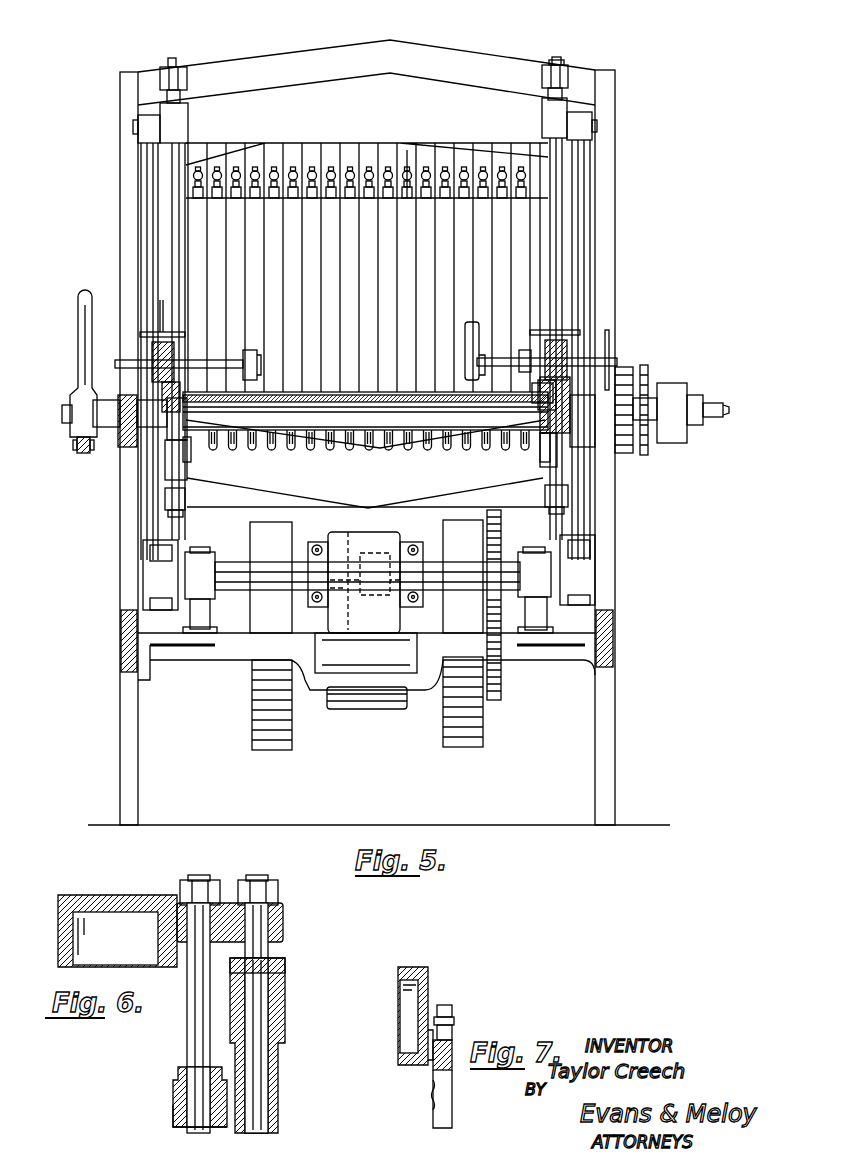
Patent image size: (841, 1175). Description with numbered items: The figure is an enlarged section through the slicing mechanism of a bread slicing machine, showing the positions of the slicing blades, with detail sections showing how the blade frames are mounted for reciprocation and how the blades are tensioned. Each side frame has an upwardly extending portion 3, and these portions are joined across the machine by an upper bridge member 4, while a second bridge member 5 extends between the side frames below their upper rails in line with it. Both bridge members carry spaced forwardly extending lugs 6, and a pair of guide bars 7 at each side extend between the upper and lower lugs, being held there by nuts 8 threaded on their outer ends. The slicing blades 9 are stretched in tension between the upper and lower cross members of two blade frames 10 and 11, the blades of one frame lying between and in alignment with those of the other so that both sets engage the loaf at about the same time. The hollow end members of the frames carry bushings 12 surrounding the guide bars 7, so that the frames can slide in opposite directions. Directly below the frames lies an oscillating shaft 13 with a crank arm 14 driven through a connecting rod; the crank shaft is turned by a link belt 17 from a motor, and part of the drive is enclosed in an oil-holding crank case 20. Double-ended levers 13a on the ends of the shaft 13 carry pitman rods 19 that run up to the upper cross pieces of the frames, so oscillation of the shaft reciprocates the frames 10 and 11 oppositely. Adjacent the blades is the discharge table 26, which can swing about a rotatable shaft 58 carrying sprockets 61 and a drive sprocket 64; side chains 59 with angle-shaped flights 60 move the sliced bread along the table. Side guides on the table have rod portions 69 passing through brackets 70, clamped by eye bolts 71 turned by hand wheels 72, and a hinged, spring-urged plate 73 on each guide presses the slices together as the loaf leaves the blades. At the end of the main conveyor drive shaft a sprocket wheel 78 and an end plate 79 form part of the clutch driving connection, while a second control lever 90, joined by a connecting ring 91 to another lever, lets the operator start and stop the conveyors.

In FIG. 5, the upwardly extending portion 3 is at (122, 245).
In FIG. 5, the upper bridge member 4 is at (483, 60).
In FIG. 6, the upper bridge member 4 is at (100, 897).
In FIG. 5, the second bridge member 5 is at (225, 502).
In FIG. 5, the lugs 6 is at (190, 20).
In FIG. 6, the lugs 6 is at (283, 915).
In FIG. 5, the guide bars 7 is at (178, 60).
In FIG. 6, the guide bars 7 is at (268, 947).
In FIG. 5, the nuts 8 is at (565, 60).
In FIG. 6, the nuts 8 is at (185, 885).
In FIG. 5, the slicing blades 9 is at (340, 160).
In FIG. 7, the slicing blades 9 is at (433, 1110).
In FIG. 5, the blade frame 10 is at (268, 125).
In FIG. 6, the blade frame 10 is at (286, 1023).
In FIG. 5, the blade frame 11 is at (407, 150).
In FIG. 6, the blade frame 11 is at (173, 1113).
In FIG. 7, the blade frame 11 is at (410, 967).
In FIG. 5, the bushings 12 is at (150, 108).
In FIG. 6, the bushings 12 is at (280, 962).
In FIG. 5, the oscillating shaft 13 is at (432, 562).
In FIG. 5, the double-ended levers 13a is at (178, 545).
In FIG. 5, the crank arm 14 is at (348, 545).
In FIG. 5, the link belt 17 is at (490, 535).
In FIG. 5, the pitman rods 19 is at (148, 210).
In FIG. 5, the crank case 20 is at (370, 700).
In FIG. 5, the discharge table 26 is at (372, 395).
In FIG. 5, the rotatable shaft 58 is at (395, 428).
In FIG. 5, the side chains 59 is at (183, 448).
In FIG. 5, the flights 60 is at (420, 392).
In FIG. 5, the sprockets 61 is at (215, 440).
In FIG. 5, the sprocket 64 is at (618, 440).
In FIG. 5, the rod portions 69 is at (607, 355).
In FIG. 5, the brackets 70 is at (148, 358).
In FIG. 5, the eye bolts 71 is at (160, 325).
In FIG. 5, the hand wheels 72 is at (143, 335).
In FIG. 5, the plate 73 is at (465, 332).
In FIG. 5, the sprocket wheel 78 is at (645, 455).
In FIG. 5, the end plate 79 is at (690, 443).
In FIG. 5, the second control lever 90 is at (77, 333).
In FIG. 5, the connecting ring 91 is at (85, 455).